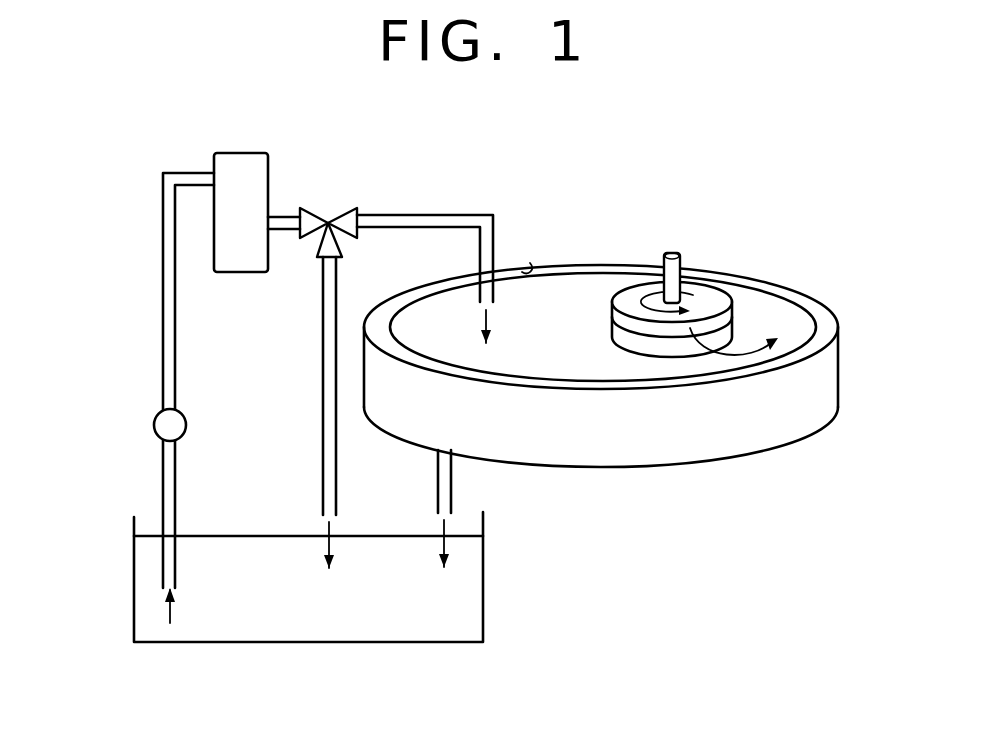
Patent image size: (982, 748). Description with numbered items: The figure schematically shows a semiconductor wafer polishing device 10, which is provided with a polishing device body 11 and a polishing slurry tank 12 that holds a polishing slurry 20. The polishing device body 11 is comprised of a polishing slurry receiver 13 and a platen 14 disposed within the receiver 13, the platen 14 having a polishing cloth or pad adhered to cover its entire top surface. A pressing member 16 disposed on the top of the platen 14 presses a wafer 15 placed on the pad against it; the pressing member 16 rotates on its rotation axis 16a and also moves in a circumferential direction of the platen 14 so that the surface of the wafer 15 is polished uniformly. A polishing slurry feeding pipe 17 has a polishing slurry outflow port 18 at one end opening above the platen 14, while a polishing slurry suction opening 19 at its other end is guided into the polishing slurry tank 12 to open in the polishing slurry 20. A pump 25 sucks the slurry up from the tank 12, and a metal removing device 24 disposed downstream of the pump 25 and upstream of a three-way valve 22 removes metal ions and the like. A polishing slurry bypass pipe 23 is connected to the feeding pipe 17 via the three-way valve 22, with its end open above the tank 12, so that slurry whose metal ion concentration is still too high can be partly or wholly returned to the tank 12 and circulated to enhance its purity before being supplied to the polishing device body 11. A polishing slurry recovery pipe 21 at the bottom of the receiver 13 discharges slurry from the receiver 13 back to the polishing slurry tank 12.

The semiconductor wafer polishing device 10 is at (569, 192).
The polishing device body 11 is at (822, 285).
The polishing slurry tank 12 is at (487, 520).
The polishing slurry receiver 13 is at (683, 438).
The platen 14 is at (593, 280).
The wafer 15 is at (767, 330).
The pressing member 16 is at (728, 307).
The rotation axis 16a is at (673, 253).
The polishing slurry feeding pipe 17 is at (453, 212).
The polishing slurry outflow port 18 is at (530, 263).
The polishing slurry suction opening 19 is at (163, 573).
The polishing slurry 20 is at (458, 603).
The polishing slurry recovery pipe 21 is at (438, 480).
The three-way valve 22 is at (342, 213).
The polishing slurry bypass pipe 23 is at (322, 365).
The metal removing device 24 is at (268, 185).
The pump 25 is at (157, 427).